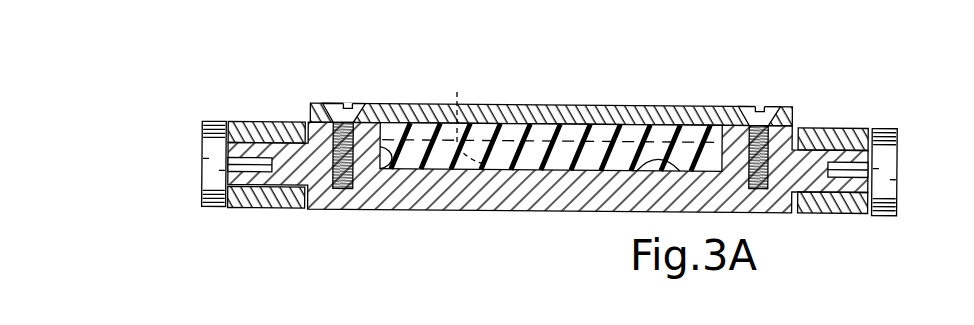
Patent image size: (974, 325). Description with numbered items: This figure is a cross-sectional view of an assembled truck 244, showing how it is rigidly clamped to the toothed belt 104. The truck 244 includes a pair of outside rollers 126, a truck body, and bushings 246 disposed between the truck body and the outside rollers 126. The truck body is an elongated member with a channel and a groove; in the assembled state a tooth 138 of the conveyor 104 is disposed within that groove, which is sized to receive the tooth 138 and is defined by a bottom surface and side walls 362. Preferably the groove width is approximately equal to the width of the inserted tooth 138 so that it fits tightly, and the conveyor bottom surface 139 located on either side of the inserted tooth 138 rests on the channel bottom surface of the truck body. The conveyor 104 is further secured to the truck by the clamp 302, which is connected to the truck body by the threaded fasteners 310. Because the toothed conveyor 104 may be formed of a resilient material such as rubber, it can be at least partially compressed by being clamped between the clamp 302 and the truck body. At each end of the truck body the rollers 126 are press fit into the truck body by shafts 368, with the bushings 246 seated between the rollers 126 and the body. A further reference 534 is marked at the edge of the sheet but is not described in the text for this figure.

The belt 104 is at (547, 104).
The outside rollers 126 is at (213, 209).
The tooth 138 is at (486, 160).
The conveyor bottom surface 139 is at (457, 92).
The truck 244 is at (152, 130).
The bushings 246 is at (273, 122).
The clamp 302 is at (579, 111).
The threaded fasteners 310 is at (357, 103).
The side walls 362 is at (391, 162).
The shafts 368 is at (247, 122).
The conductor 534 is at (952, 324).